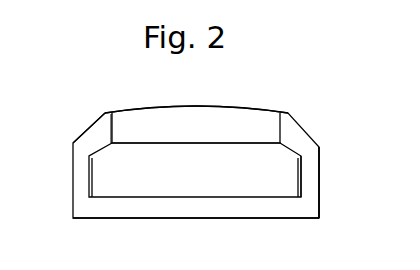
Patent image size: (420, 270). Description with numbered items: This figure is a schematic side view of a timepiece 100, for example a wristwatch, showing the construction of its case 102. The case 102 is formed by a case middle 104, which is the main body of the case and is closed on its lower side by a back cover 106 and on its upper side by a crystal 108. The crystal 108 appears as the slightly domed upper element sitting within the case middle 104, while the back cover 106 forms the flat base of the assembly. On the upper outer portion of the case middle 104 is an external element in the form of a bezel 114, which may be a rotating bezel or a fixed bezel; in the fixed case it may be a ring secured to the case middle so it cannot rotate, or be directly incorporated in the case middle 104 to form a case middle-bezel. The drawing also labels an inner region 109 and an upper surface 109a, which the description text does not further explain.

The timepiece 100 is at (310, 113).
The case 102 is at (321, 148).
The case middle 104 is at (308, 182).
The back cover 106 is at (252, 205).
The crystal 108 is at (200, 112).
The inner cavity 109 is at (162, 213).
The upper surface of cavity 109a is at (150, 120).
The bezel 114 is at (88, 137).